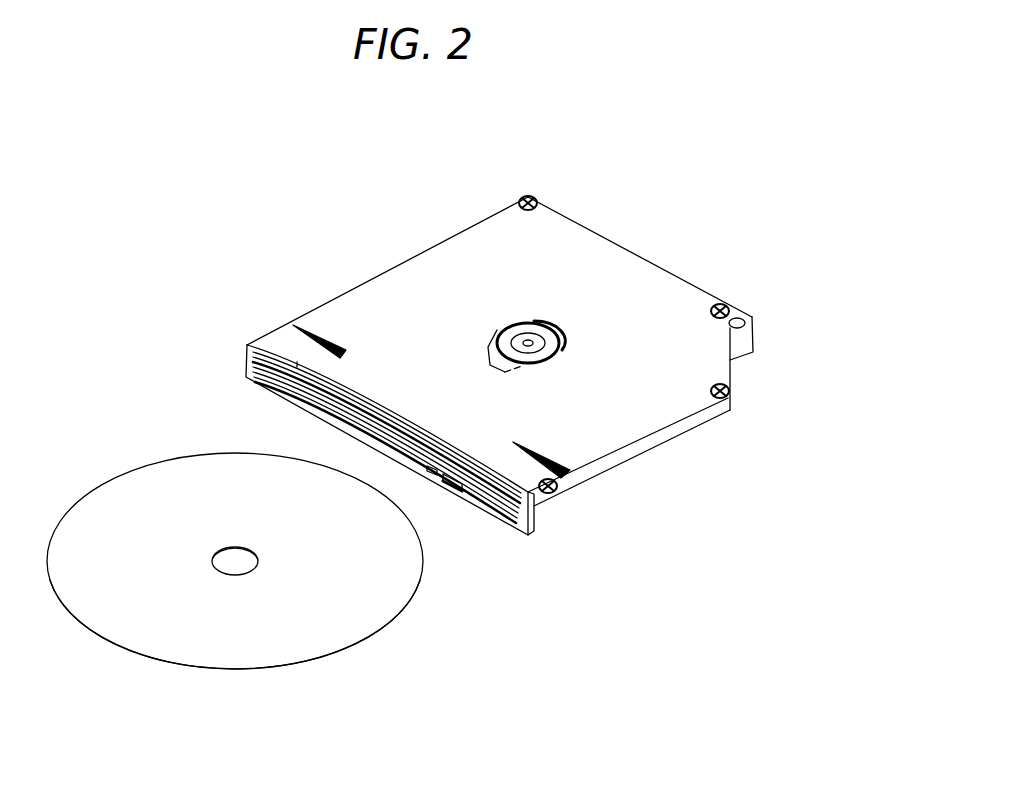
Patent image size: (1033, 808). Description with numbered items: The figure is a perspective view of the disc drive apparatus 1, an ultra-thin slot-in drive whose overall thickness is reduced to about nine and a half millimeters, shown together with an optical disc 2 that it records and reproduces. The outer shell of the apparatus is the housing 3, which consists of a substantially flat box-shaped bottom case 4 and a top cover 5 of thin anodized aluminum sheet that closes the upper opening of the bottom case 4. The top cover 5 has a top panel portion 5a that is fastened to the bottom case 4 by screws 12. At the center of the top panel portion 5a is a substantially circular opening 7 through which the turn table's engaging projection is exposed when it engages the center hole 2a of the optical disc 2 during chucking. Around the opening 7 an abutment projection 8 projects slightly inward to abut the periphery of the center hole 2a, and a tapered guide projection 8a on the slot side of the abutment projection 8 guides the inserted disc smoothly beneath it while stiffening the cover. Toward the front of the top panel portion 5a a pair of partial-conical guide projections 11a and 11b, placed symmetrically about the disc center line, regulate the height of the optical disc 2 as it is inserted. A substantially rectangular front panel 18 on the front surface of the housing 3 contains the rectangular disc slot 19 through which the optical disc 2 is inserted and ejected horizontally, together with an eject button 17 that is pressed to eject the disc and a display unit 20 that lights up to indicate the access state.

The disc drive apparatus 1 is at (532, 351).
The optical disc 2 is at (235, 533).
The center hole 2a is at (246, 563).
The housing 3 is at (673, 373).
The bottom case 4 is at (757, 344).
The top cover 5 is at (740, 304).
The top panel portion 5a is at (640, 276).
The opening 7 is at (534, 347).
The abutment projection 8 is at (557, 361).
The guide projection 8a is at (488, 368).
The guide projection 11a is at (310, 326).
The guide projection 11b is at (583, 467).
The screw 12 is at (529, 195).
The eject button 17 is at (455, 492).
The front panel 18 is at (387, 459).
The disc slot 19 is at (380, 414).
The display unit 20 is at (431, 476).